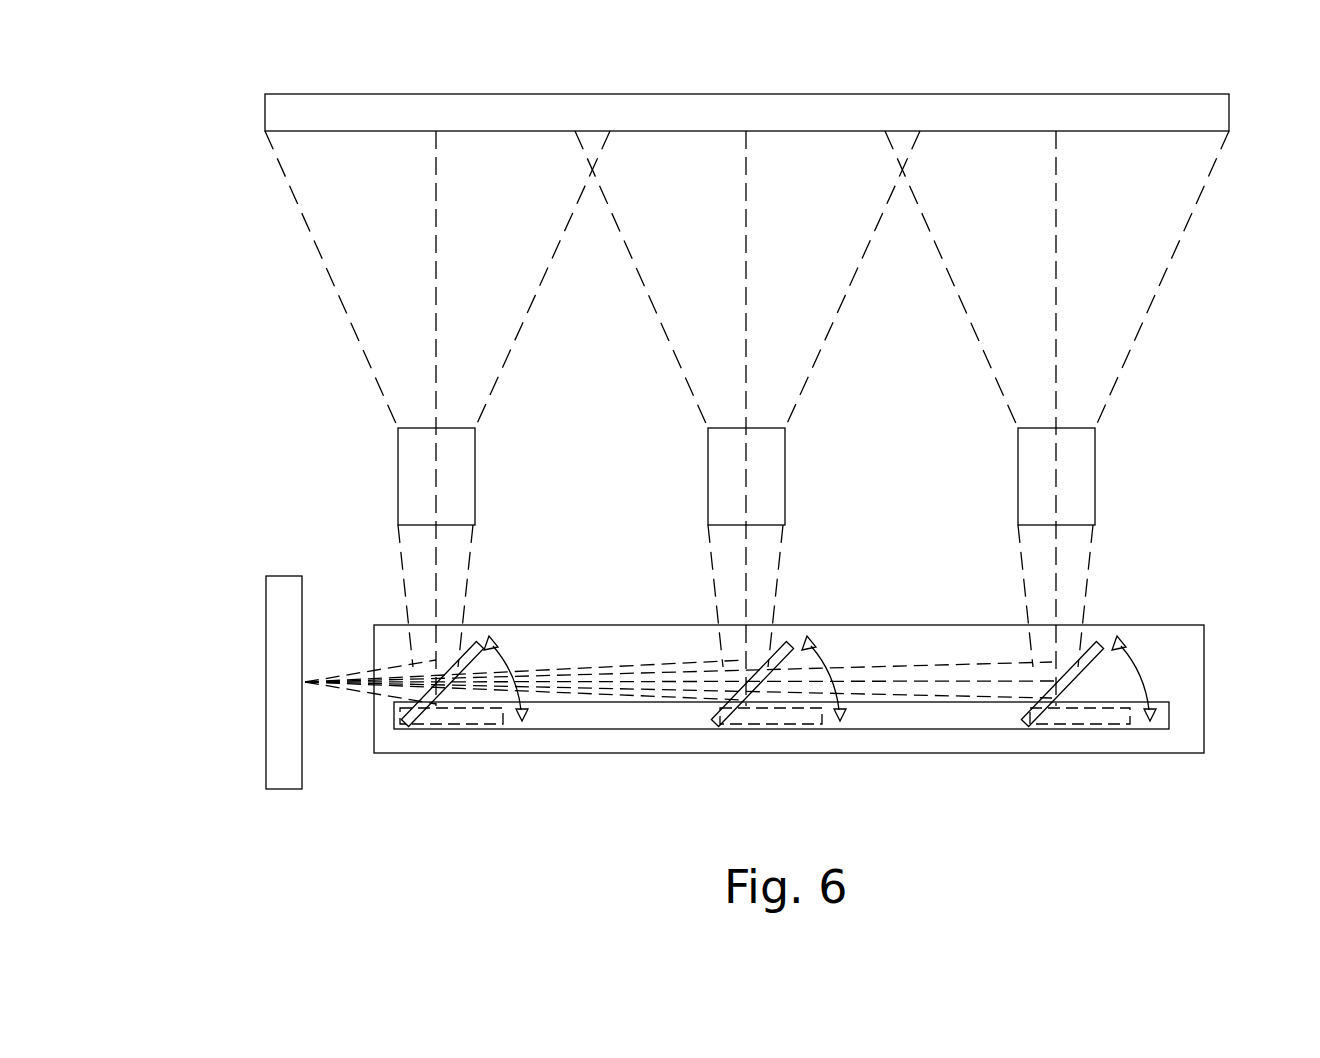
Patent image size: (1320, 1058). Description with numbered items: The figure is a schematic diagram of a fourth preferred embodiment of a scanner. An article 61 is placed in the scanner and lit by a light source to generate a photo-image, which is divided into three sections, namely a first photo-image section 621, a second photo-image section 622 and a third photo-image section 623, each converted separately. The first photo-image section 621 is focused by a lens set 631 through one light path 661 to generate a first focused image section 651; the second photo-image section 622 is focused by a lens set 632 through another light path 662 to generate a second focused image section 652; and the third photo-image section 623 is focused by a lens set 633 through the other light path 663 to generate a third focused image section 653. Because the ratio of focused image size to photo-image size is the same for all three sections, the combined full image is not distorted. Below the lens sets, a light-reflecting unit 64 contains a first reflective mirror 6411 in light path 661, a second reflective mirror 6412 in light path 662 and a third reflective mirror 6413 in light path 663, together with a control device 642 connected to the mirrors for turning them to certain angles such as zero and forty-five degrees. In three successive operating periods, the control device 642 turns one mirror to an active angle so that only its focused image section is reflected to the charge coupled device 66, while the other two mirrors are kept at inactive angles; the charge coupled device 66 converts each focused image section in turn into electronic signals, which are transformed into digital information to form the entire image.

The article 61 is at (1212, 118).
The first photo-image section 621 is at (314, 247).
The second photo-image section 622 is at (867, 246).
The third photo-image section 623 is at (1179, 247).
The lens set 631 is at (415, 466).
The lens set 632 is at (765, 466).
The lens set 633 is at (1075, 466).
The light path 661 is at (437, 555).
The light path 662 is at (747, 553).
The light path 663 is at (1057, 553).
The first focused image section 651 is at (415, 663).
The second focused image section 652 is at (725, 661).
The third focused image section 653 is at (1035, 661).
The light-reflecting unit 64 is at (1180, 690).
The control device 642 is at (612, 725).
The first reflective mirror 6411 is at (460, 673).
The second reflective mirror 6412 is at (770, 672).
The third reflective mirror 6413 is at (1083, 672).
The charge coupled device 66 is at (278, 656).